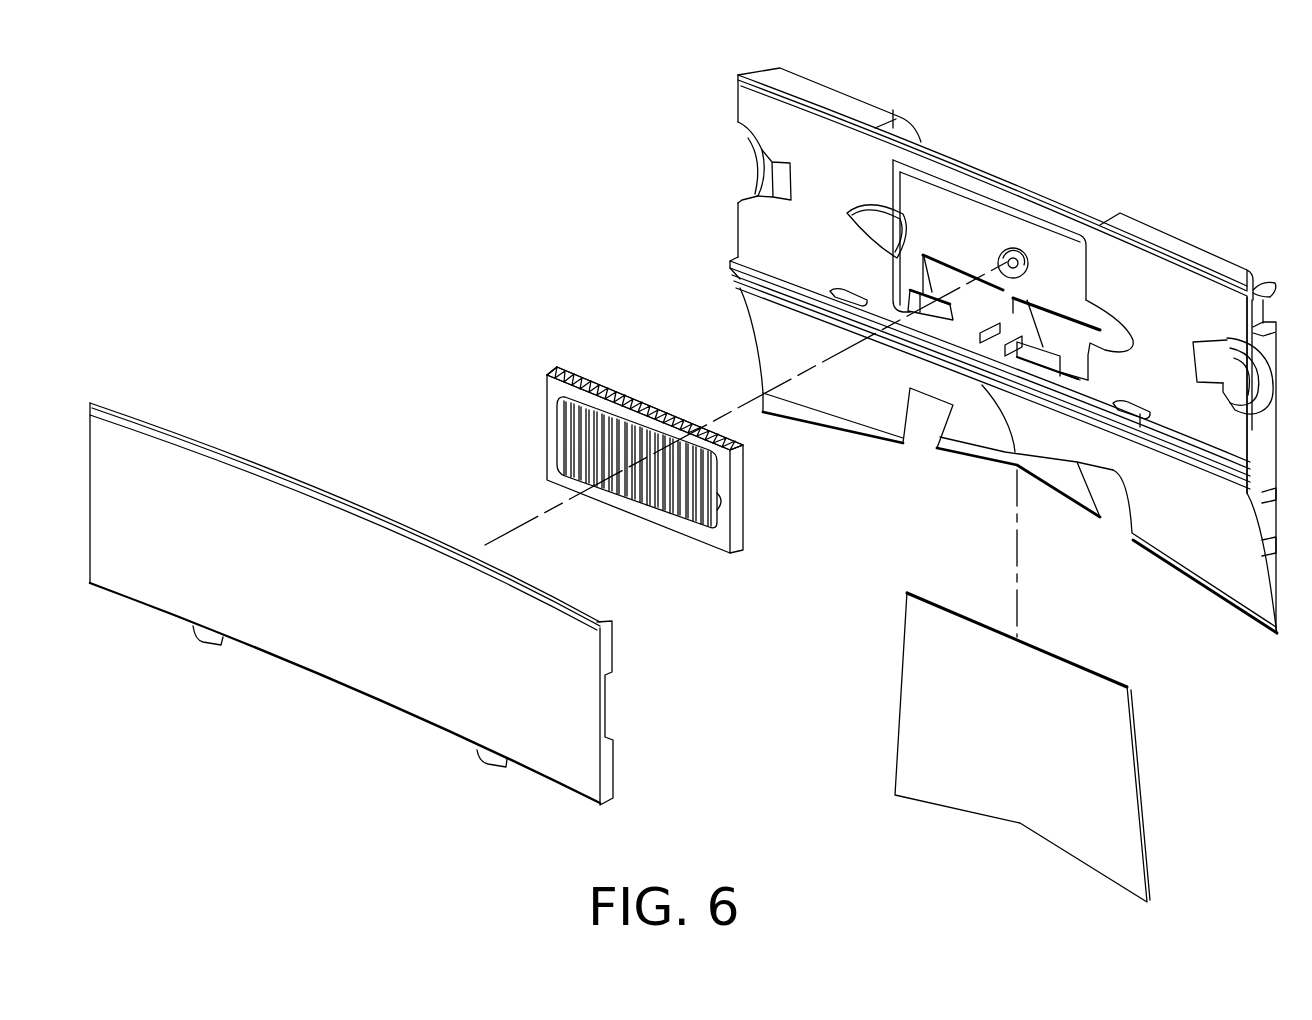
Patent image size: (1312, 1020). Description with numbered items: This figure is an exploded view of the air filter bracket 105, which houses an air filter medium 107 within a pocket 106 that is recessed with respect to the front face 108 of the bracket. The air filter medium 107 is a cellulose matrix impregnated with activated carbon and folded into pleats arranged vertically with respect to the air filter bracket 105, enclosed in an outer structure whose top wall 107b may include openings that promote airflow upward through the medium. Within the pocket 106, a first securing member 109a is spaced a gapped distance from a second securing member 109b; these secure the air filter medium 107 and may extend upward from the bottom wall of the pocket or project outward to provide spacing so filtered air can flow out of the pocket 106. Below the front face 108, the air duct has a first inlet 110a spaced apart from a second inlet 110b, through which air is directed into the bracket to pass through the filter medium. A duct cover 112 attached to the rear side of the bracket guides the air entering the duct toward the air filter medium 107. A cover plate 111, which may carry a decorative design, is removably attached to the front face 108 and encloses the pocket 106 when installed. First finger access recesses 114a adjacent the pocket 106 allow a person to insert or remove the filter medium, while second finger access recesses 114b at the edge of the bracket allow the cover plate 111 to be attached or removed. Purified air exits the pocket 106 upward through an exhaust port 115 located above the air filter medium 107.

The air filter bracket 105 is at (945, 319).
The pocket 106 is at (975, 248).
The air filter medium 107 is at (547, 404).
The top wall 107b is at (553, 367).
The front face 108 is at (1173, 302).
The first securing member 109a is at (947, 317).
The second securing member 109b is at (1060, 371).
The first inlet 110a is at (918, 431).
The second inlet 110b is at (1115, 496).
The cover plate 111 is at (134, 600).
The duct cover 112 is at (903, 710).
The first finger access recess 114a is at (883, 233).
The second finger access recess 114b is at (757, 182).
The exhaust port 115 is at (1007, 163).